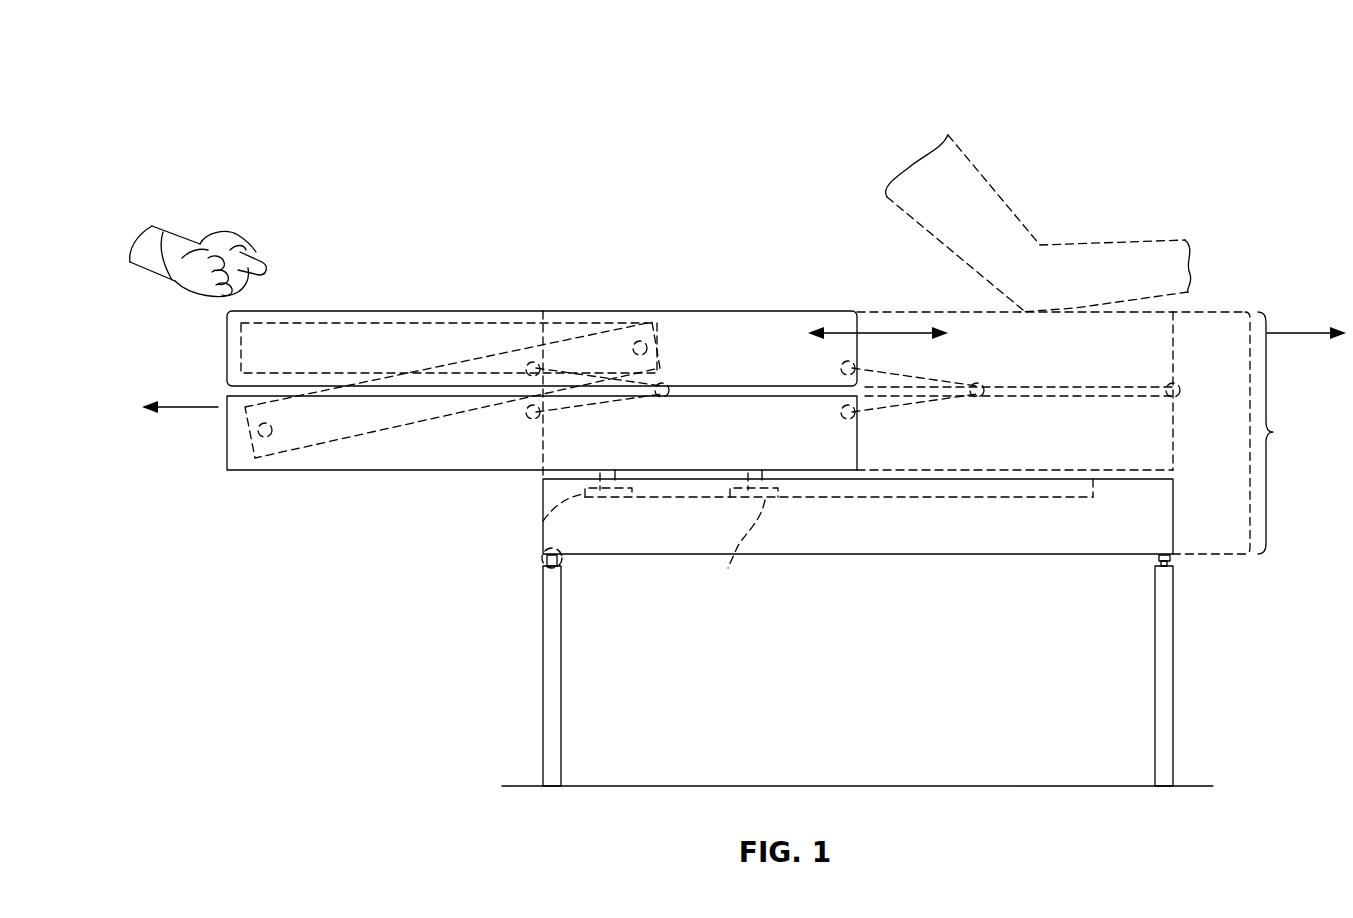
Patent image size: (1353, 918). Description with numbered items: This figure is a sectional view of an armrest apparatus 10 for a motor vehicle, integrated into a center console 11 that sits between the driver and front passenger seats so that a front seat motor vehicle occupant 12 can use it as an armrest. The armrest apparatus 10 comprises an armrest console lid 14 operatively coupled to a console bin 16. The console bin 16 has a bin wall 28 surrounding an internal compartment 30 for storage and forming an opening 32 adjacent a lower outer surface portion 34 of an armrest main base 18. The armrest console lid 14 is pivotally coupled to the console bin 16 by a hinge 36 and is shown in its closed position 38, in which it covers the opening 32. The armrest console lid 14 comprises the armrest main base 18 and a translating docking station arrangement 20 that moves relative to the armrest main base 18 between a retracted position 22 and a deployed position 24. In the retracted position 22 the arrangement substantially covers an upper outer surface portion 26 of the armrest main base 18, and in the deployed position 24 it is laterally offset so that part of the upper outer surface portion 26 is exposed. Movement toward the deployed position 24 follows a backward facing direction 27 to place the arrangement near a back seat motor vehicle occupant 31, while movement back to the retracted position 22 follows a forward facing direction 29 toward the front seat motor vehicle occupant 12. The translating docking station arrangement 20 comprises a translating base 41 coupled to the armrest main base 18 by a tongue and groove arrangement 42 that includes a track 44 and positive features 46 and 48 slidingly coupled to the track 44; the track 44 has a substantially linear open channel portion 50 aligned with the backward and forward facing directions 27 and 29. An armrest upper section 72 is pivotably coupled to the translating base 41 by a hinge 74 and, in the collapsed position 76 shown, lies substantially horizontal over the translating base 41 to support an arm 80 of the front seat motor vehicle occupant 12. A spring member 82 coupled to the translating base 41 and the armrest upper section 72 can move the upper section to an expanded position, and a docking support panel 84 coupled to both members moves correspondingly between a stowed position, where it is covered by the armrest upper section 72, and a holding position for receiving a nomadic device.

The armrest apparatus 10 is at (356, 103).
The center console 11 is at (520, 167).
The front seat motor vehicle occupant 12 is at (963, 170).
The armrest console lid 14 is at (1242, 433).
The console bin 16 is at (858, 670).
The armrest main base 18 is at (630, 545).
The translating docking station arrangement 20 is at (214, 366).
The retracted position 22 is at (907, 309).
The deployed position 24 is at (415, 311).
The upper outer surface portion 26 is at (1105, 480).
The backward facing direction 27 is at (180, 409).
The bin wall 28 is at (543, 648).
The forward facing direction 29 is at (1292, 333).
The internal compartment 30 is at (857, 713).
The back seat motor vehicle occupant 31 is at (242, 240).
The opening 32 is at (770, 590).
The lower outer surface portion 34 is at (1113, 556).
The hinge 36 is at (536, 566).
The closed position 38 is at (1175, 506).
The translating base 41 is at (410, 448).
The tongue and groove arrangement 42 is at (697, 492).
The track 44 is at (952, 500).
The positive feature 46 is at (543, 521).
The positive feature 48 is at (738, 551).
The substantially linear open channel portion 50 is at (987, 485).
The armrest upper section 72 is at (742, 311).
The hinge 74 is at (840, 392).
The collapsed position 76 is at (501, 271).
The arm 80 is at (1016, 198).
The spring member 82 is at (580, 405).
The docking support panel 84 is at (342, 413).